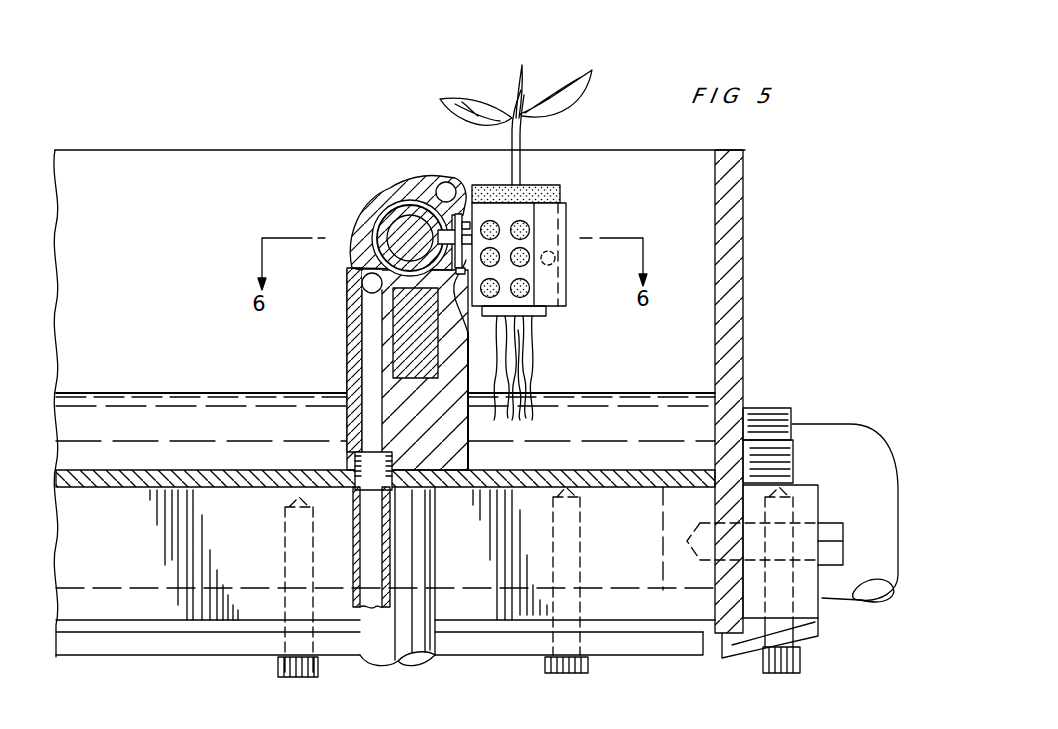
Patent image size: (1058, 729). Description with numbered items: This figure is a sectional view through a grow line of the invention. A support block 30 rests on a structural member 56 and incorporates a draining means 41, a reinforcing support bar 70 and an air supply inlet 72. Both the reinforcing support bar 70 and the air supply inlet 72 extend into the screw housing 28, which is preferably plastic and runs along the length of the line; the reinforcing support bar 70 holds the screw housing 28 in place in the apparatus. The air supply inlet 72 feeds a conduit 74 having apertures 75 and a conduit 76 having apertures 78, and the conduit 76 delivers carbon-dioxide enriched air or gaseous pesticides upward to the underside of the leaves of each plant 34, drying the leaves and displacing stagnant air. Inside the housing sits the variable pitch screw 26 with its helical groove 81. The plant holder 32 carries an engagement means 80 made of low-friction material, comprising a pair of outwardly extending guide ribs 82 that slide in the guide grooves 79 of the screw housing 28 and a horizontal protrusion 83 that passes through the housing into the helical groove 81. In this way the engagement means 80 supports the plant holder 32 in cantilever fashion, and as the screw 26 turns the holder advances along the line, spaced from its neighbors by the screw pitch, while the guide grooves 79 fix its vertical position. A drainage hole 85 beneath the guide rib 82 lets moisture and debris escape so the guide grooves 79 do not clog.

The variable pitch screw 26 is at (398, 212).
The screw housing 28 is at (358, 232).
The support block 30 is at (453, 452).
The plant holder 32 is at (548, 287).
The plant 34 is at (566, 76).
The draining means 41 is at (420, 553).
The structural member 56 is at (574, 471).
The reinforcing support bar 70 is at (406, 355).
The air supply inlet 72 is at (368, 418).
The conduit 74 is at (361, 289).
The apertures 75 is at (349, 262).
The conduit 76 is at (432, 178).
The apertures 78 is at (446, 182).
The guide grooves 79 is at (460, 214).
The engagement means 80 is at (468, 238).
The helical groove 81 is at (432, 233).
The guide ribs 82 is at (462, 228).
The horizontal protrusion 83 is at (446, 246).
The drainage hole 85 is at (476, 307).